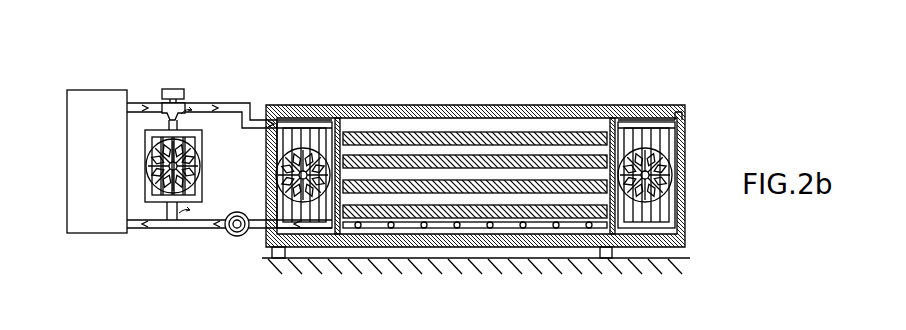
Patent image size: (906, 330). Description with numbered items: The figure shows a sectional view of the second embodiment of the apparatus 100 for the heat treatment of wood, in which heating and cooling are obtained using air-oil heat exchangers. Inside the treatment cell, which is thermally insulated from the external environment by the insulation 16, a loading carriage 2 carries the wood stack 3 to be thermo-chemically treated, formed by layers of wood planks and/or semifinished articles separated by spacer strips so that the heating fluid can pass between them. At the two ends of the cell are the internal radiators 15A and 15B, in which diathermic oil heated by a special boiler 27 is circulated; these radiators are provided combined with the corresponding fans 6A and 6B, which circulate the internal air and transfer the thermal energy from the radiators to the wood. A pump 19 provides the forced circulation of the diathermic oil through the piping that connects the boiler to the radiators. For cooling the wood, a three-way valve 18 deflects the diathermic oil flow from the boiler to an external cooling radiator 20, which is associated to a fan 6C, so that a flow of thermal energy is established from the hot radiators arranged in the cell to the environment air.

The apparatus 100 is at (147, 78).
The 3-way valve 18 is at (179, 88).
The boiler 27 is at (95, 235).
The external cooling radiator 20 is at (160, 203).
The pump 19 is at (230, 238).
The internal radiator 15A is at (283, 125).
The internal radiator 15B is at (650, 128).
The fan 6A is at (282, 180).
The fan 6B is at (668, 170).
The fan 6C is at (200, 170).
The wood stack 3 is at (480, 135).
The insulation 16 is at (558, 105).
The loading carriage 2 is at (402, 228).